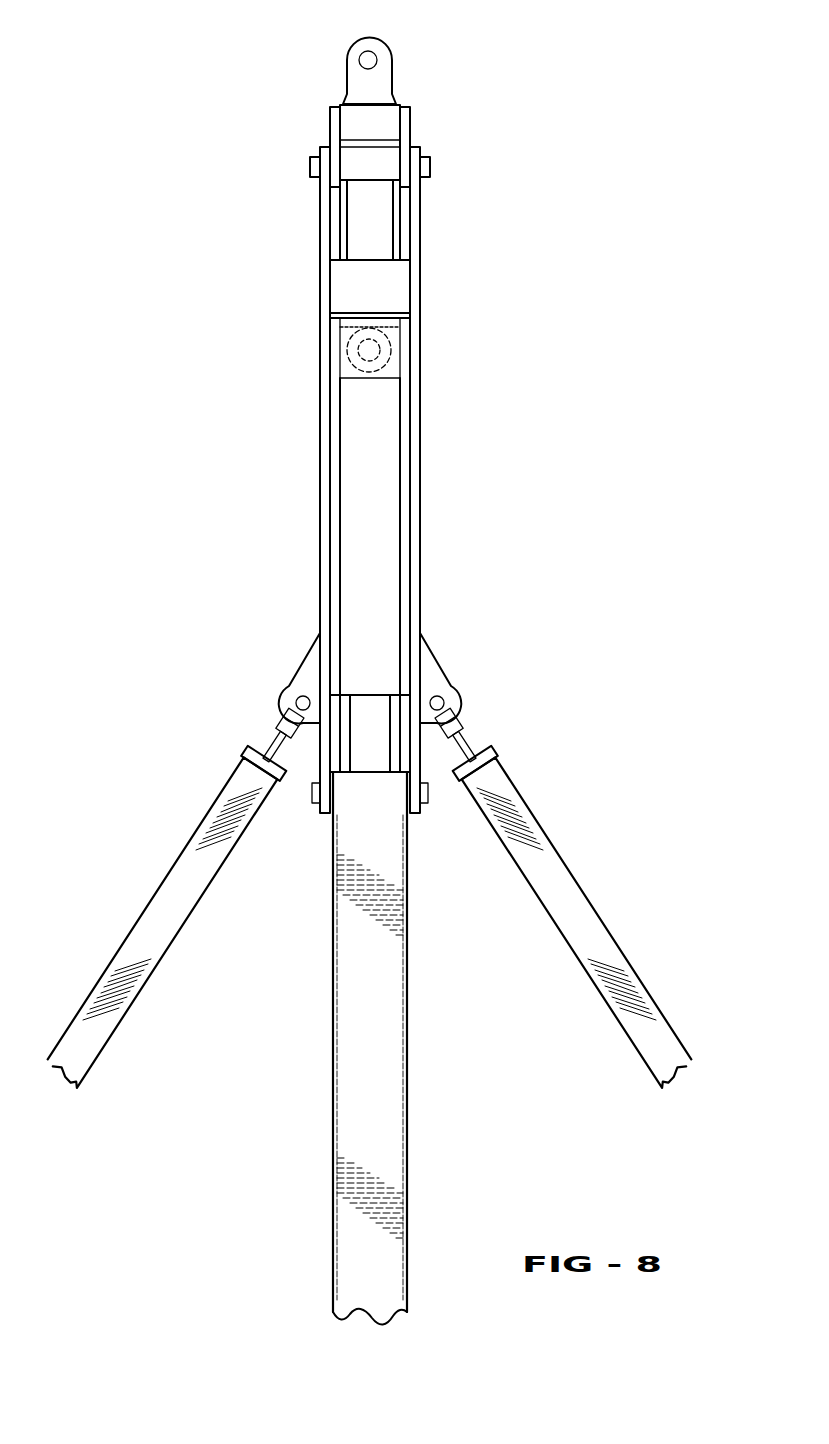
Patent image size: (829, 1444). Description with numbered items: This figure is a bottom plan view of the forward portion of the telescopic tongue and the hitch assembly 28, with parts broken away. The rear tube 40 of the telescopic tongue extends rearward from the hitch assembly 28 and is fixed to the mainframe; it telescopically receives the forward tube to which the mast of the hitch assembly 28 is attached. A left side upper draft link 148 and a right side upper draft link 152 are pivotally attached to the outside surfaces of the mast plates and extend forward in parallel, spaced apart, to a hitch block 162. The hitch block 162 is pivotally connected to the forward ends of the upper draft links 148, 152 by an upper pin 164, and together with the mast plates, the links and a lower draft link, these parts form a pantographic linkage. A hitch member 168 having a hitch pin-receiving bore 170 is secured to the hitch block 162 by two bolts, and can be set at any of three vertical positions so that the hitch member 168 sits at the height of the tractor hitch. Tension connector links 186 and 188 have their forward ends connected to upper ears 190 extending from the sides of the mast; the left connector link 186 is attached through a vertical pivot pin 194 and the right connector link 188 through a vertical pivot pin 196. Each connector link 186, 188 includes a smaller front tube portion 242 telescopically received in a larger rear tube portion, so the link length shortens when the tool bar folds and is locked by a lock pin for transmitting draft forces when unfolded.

The hitch assembly 28 is at (441, 367).
The rear tube 40 is at (351, 1111).
The left side upper draft link 148 is at (321, 272).
The right side upper draft link 152 is at (421, 222).
The hitch block 162 is at (328, 127).
The upper pin 164 is at (431, 167).
The hitch member 168 is at (345, 82).
The hitch pin-receiving bore 170 is at (362, 68).
The left tension connector link 186 is at (151, 927).
The right tension connector link 188 is at (594, 971).
The upper ears 190 is at (311, 668).
The vertical pivot pin 194 is at (283, 707).
The vertical pivot pin 196 is at (445, 704).
The front tube portion 242 is at (232, 775).